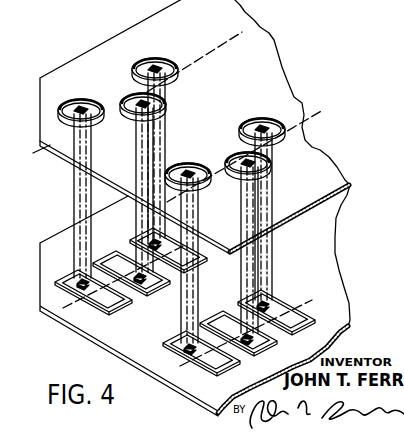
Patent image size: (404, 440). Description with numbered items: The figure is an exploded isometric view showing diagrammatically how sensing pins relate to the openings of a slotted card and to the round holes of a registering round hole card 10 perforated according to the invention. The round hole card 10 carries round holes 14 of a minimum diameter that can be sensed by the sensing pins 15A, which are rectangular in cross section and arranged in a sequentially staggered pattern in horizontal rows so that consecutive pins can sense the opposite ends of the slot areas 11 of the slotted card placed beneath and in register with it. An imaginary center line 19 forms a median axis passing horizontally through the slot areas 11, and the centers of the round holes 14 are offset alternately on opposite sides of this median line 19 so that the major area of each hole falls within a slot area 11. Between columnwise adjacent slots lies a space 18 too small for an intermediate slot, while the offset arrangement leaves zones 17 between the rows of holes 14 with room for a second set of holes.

The round hole card 10 is at (68, 147).
The slot areas 11 is at (76, 276).
The round holes 14 is at (161, 113).
The sensing pins 15A is at (158, 66).
The zones 17 is at (188, 128).
The space 18 is at (160, 327).
The imaginary center line 19 is at (208, 56).